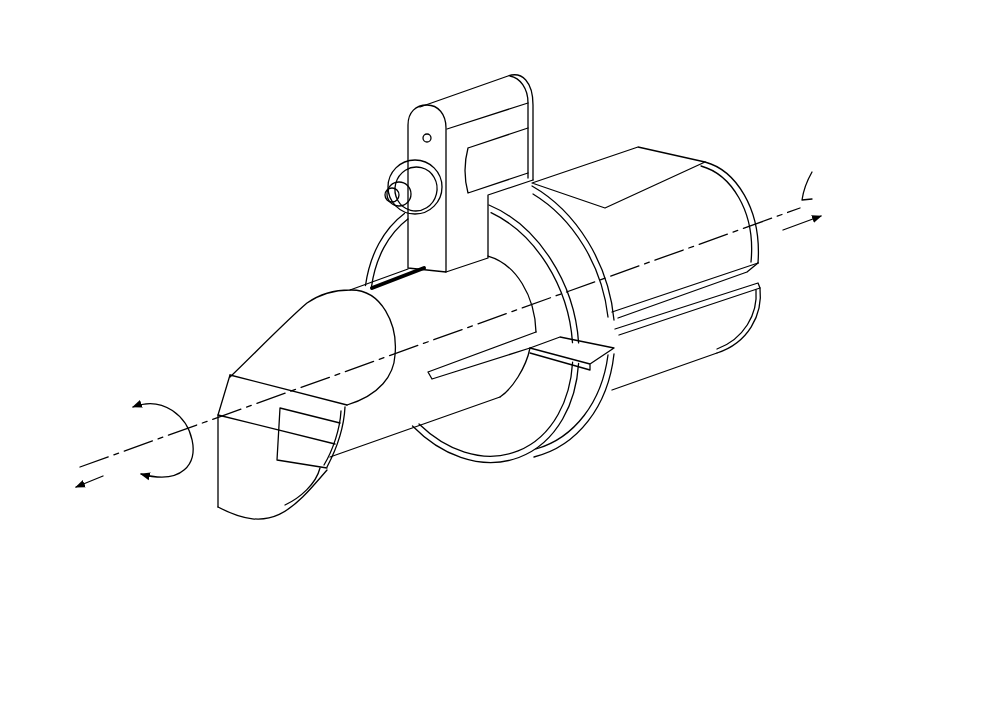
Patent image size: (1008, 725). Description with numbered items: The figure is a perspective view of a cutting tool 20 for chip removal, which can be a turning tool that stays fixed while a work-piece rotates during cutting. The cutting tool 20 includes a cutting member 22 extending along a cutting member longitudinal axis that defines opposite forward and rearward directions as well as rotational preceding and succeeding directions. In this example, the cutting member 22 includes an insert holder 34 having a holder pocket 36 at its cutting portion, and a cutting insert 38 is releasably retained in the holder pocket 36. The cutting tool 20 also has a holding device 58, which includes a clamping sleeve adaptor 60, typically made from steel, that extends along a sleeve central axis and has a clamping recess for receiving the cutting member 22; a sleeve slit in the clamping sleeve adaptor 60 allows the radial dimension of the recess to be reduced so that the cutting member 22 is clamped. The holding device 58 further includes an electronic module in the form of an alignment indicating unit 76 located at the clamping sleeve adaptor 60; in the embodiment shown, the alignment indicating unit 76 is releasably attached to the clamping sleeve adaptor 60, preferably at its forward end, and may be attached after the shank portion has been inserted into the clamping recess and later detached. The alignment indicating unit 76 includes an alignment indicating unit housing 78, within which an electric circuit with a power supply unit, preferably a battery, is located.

The cutting tool 20 is at (461, 368).
The cutting member 22 is at (396, 369).
The insert holder 34 is at (396, 387).
The holder pocket 36 is at (253, 413).
The cutting insert 38 is at (342, 485).
The holding device 58 is at (563, 237).
The clamping sleeve adaptor 60 is at (693, 388).
The alignment indicating unit 76 is at (455, 147).
The alignment indicating unit housing 78 is at (509, 88).